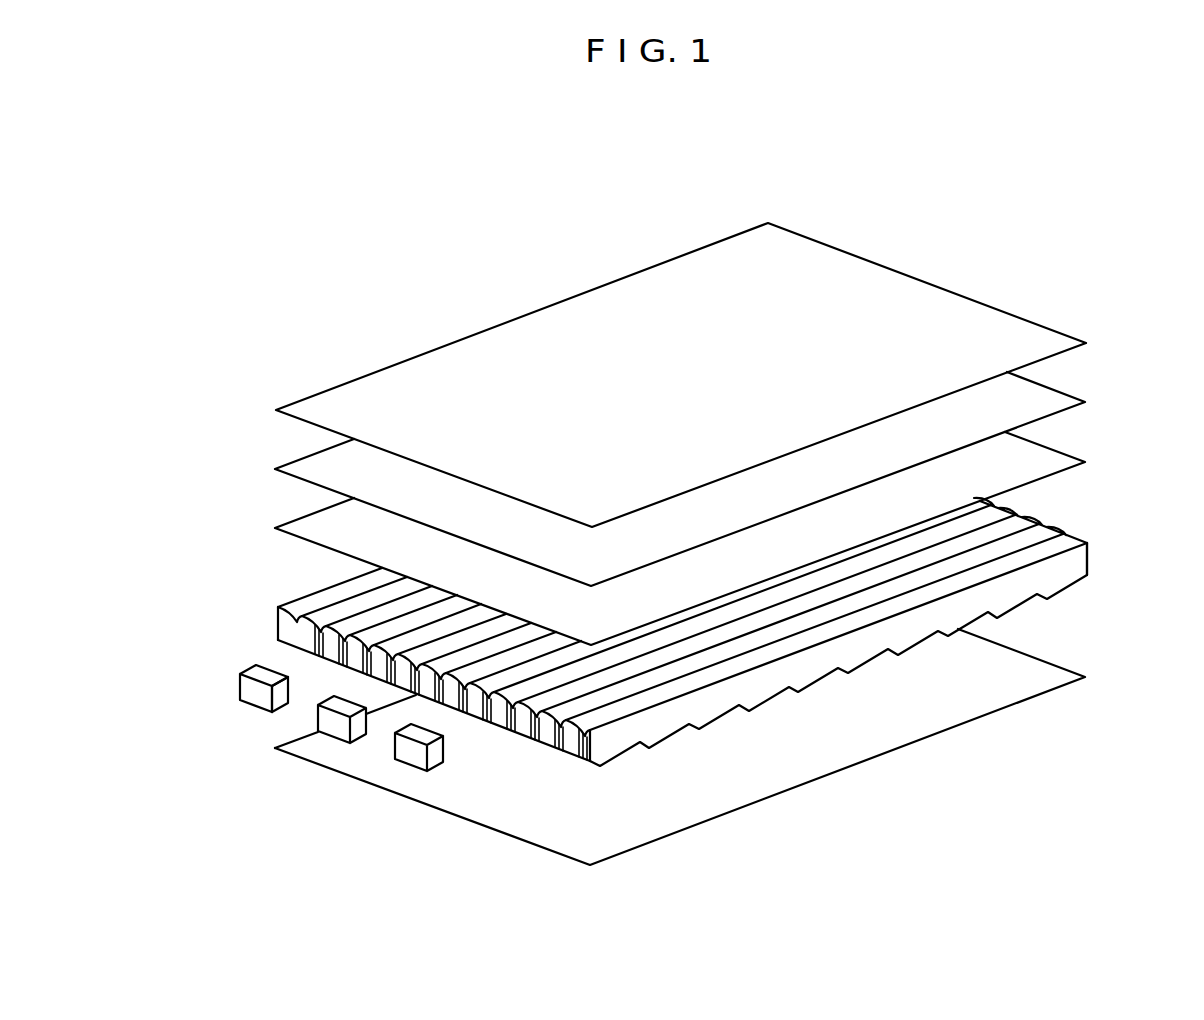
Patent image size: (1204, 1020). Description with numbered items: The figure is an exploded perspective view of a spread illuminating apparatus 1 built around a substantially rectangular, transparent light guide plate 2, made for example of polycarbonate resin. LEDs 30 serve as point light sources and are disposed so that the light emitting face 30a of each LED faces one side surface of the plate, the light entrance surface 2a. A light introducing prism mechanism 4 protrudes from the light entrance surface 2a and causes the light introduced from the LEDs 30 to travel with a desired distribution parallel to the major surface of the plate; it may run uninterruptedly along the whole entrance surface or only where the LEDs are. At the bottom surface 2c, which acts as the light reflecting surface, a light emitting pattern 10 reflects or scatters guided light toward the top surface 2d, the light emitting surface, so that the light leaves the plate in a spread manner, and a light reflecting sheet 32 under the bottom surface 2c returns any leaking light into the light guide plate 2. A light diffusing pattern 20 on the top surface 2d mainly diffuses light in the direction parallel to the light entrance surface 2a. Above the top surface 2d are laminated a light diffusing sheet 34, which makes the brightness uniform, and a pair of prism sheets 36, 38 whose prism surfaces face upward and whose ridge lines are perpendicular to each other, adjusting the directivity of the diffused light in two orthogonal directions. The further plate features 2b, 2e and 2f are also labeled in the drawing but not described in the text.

The spread illuminating apparatus 1 is at (1136, 166).
The prism sheet 38 is at (976, 317).
The prism sheet 36 is at (1042, 403).
The light diffusing sheet 34 is at (1037, 465).
The light diffusing pattern 20 is at (1046, 503).
The light emitting pattern 10 is at (670, 740).
The light guide plate 2 is at (786, 733).
The light entrance surface 2a is at (292, 635).
The side surface 2b is at (1090, 560).
The bottom surface 2c is at (1002, 613).
The top surface 2d is at (1077, 544).
The corner of light guide plate 2e is at (278, 607).
The front side surface 2f is at (1047, 580).
The light introducing prism mechanism 4 is at (489, 741).
The LED 30 is at (237, 687).
The light emitting face 30a is at (293, 692).
The light reflecting sheet 32 is at (960, 711).